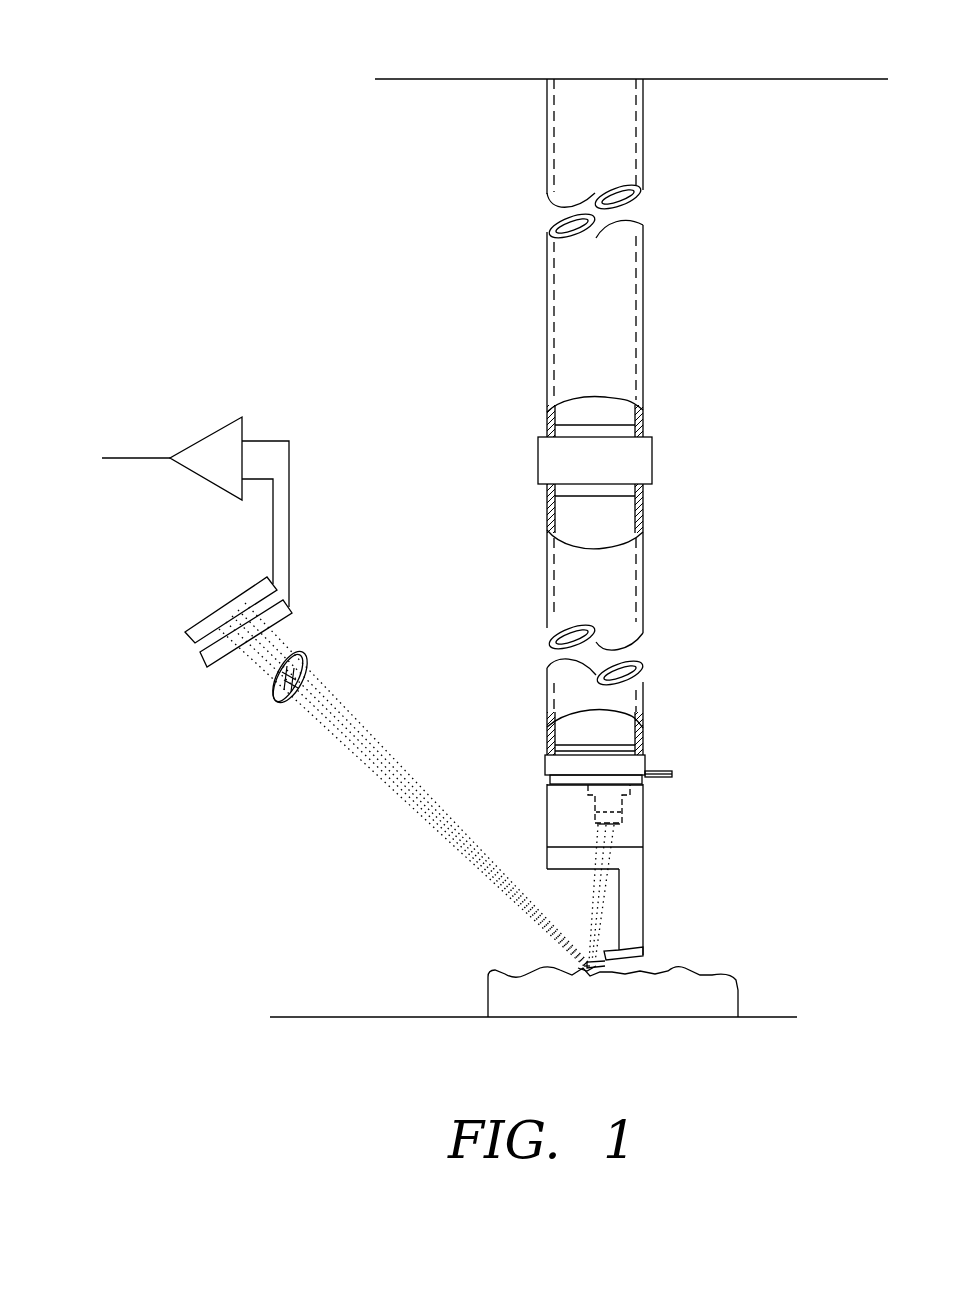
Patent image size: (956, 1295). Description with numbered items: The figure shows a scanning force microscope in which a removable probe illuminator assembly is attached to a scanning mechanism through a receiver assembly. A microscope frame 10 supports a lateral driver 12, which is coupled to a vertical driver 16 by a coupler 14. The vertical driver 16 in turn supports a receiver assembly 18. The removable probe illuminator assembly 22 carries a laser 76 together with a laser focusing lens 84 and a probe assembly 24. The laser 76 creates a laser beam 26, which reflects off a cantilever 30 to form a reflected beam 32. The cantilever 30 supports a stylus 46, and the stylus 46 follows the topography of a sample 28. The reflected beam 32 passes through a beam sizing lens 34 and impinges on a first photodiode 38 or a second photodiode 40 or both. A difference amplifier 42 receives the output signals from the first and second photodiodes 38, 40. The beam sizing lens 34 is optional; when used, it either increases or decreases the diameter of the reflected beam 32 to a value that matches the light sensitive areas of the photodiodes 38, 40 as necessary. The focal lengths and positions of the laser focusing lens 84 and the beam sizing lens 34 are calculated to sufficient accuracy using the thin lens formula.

The microscope frame 10 is at (752, 54).
The lateral driver 12 is at (608, 333).
The coupler 14 is at (637, 462).
The vertical driver 16 is at (585, 585).
The receiver assembly 18 is at (673, 760).
The removable probe illuminator assembly 22 is at (660, 833).
The probe assembly 24 is at (663, 952).
The laser beam 26 is at (595, 937).
The sample 28 is at (728, 998).
The cantilever 30 is at (587, 962).
The reflected beam 32 is at (445, 823).
The beam sizing lens 34 is at (272, 691).
The first photodiode 38 is at (210, 658).
The second photodiode 40 is at (197, 635).
The difference amplifier 42 is at (213, 447).
The stylus 46 is at (587, 965).
The laser 76 is at (620, 803).
The laser focusing lens 84 is at (610, 826).